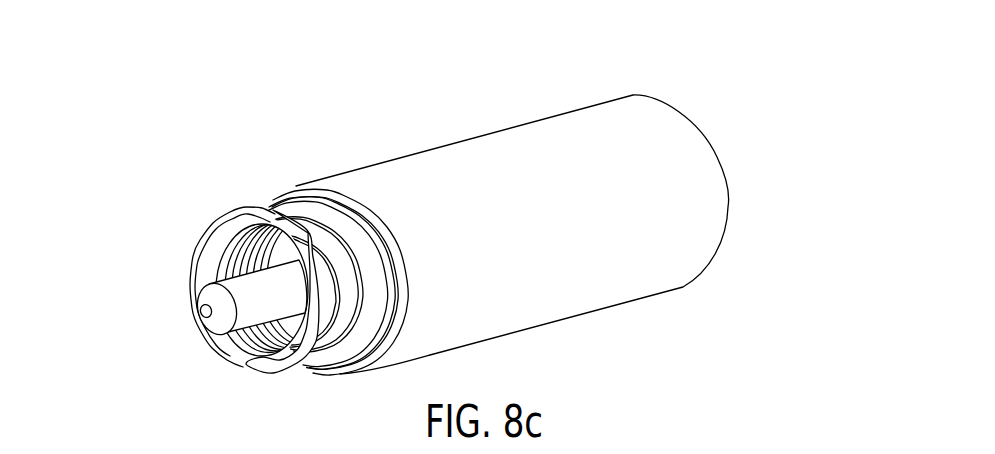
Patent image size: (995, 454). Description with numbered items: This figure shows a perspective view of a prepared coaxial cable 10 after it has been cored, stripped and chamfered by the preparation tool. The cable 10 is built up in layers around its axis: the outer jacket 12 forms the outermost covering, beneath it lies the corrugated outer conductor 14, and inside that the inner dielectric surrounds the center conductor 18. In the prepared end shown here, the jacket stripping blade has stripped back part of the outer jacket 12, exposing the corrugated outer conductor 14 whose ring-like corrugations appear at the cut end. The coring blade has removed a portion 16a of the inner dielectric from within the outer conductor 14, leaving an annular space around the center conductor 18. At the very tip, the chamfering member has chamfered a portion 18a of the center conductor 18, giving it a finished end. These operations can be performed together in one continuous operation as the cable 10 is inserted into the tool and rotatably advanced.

The coaxial cable 10 is at (733, 115).
The outer jacket 12 is at (447, 177).
The corrugated outer conductor 14 is at (312, 358).
The portion of the inner dielectric 16a is at (250, 253).
The center conductor 18 is at (262, 303).
The portion of the center conductor 18a is at (208, 322).